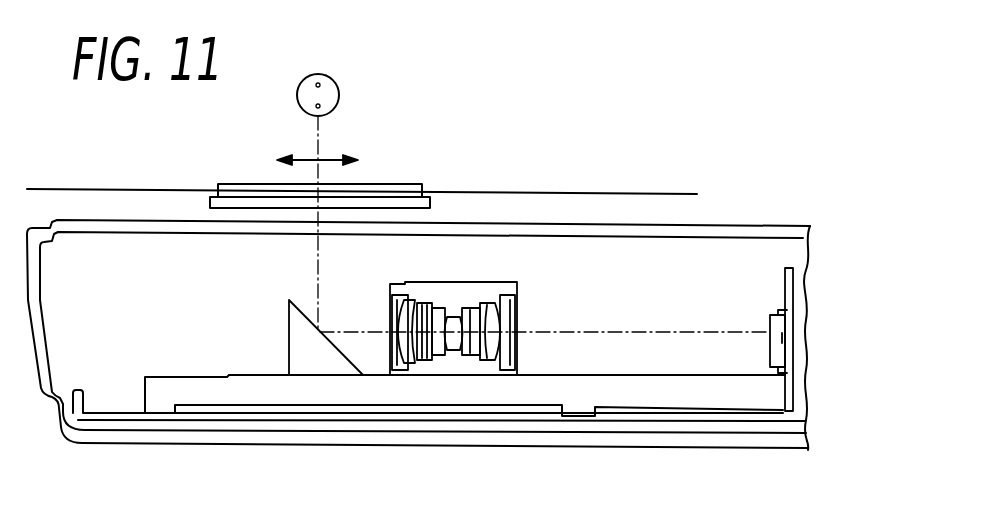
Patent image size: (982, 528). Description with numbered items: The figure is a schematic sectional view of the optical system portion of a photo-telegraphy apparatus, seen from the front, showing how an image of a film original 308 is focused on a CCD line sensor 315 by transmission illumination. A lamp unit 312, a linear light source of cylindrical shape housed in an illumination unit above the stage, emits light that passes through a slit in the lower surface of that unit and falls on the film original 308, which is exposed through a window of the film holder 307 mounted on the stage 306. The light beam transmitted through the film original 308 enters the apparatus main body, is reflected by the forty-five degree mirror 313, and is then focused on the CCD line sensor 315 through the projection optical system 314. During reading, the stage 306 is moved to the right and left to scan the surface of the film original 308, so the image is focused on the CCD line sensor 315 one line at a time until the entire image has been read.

The stage 306 is at (433, 207).
The film holder 307 is at (417, 184).
The film original 308 is at (652, 192).
The lamp unit 312 is at (342, 93).
The 45° mirror 313 is at (288, 332).
The projection optical system 314 is at (418, 365).
The CCD line sensor 315 is at (782, 321).